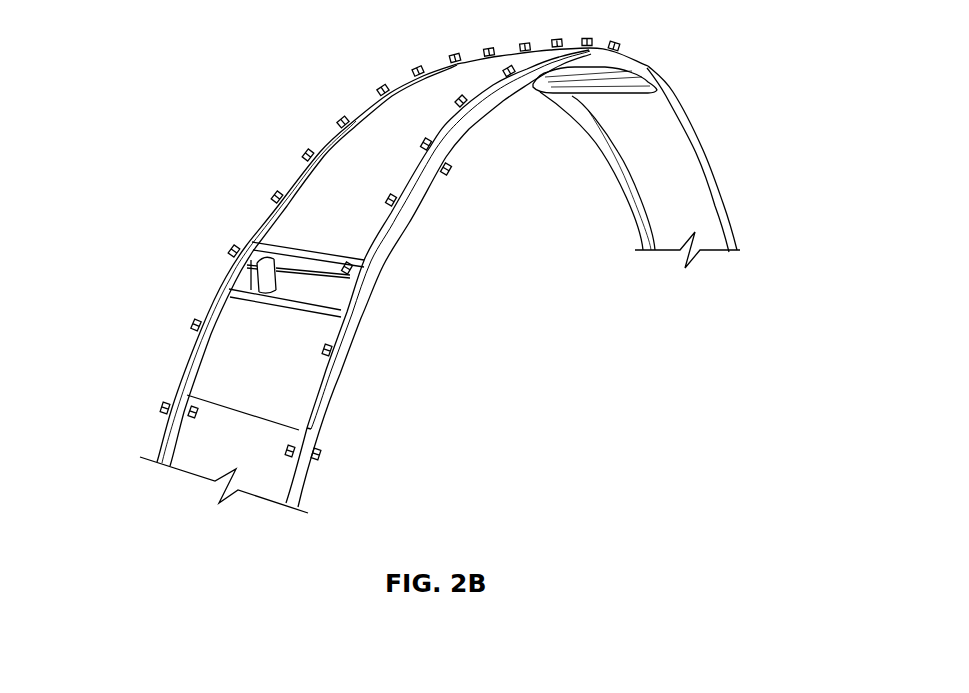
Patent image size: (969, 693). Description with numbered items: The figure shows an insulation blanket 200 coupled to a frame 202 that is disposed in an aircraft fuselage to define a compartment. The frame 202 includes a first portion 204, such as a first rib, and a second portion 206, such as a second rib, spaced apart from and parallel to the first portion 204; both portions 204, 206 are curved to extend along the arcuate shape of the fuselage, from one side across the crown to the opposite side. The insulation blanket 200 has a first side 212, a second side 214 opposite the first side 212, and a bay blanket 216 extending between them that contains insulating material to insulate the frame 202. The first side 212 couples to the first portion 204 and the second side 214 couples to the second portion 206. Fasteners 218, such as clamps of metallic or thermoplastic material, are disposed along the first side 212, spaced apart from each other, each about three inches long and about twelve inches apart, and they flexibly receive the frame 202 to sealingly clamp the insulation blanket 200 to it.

The insulation blanket 200 is at (439, 270).
The frame 202 is at (507, 150).
The first portion 204 is at (727, 205).
The second portion 206 is at (637, 218).
The first side 212 is at (333, 378).
The second side 214 is at (253, 237).
The bay blanket 216 is at (305, 198).
The fasteners 218 is at (652, 58).